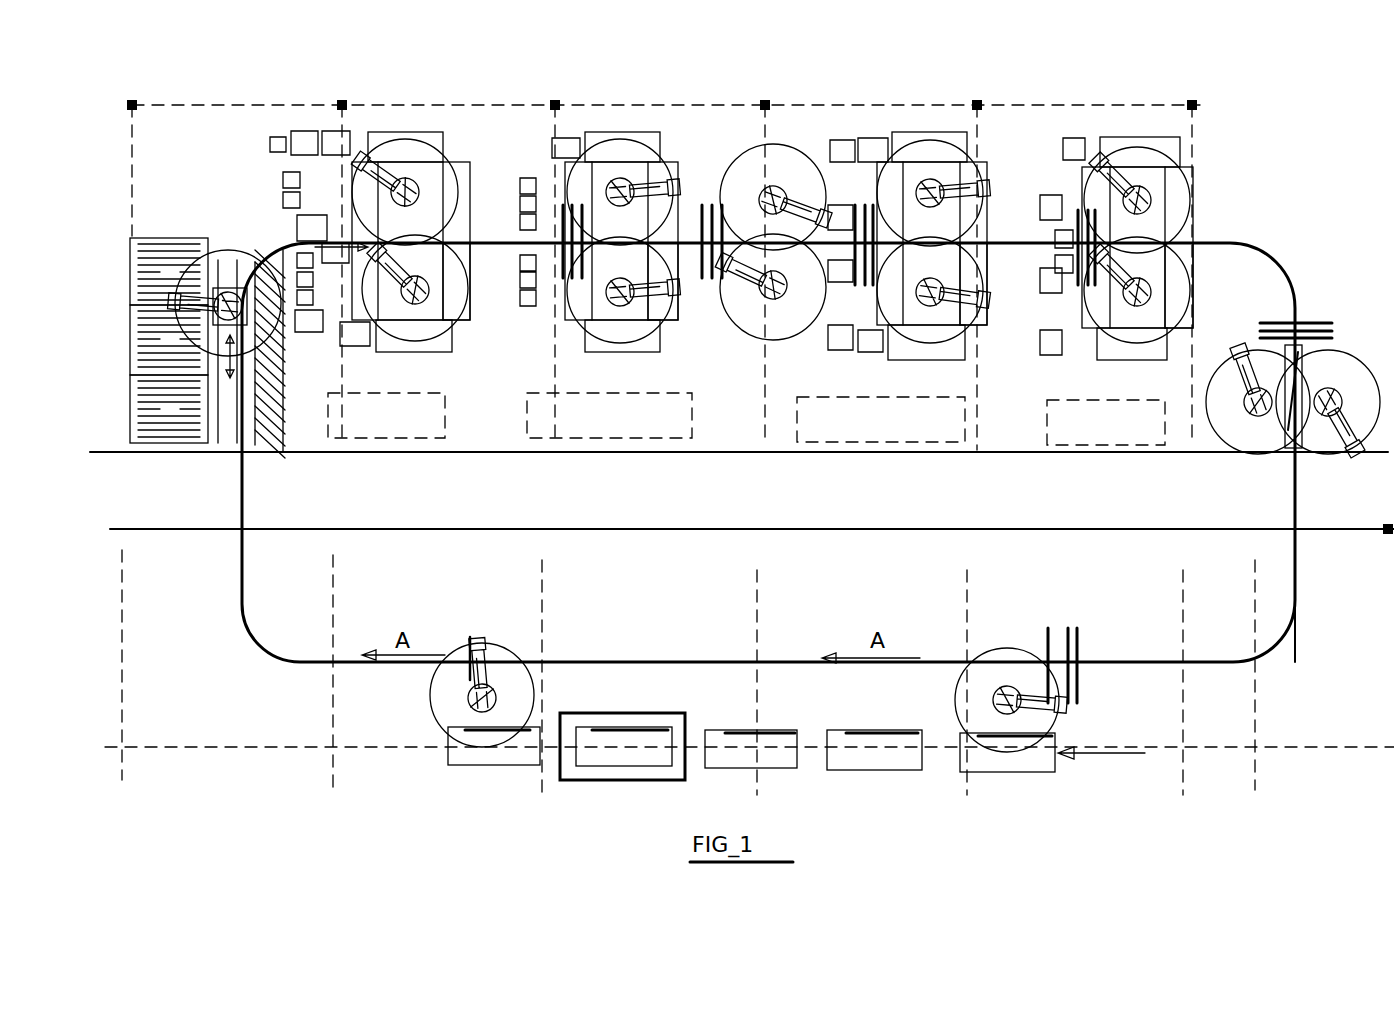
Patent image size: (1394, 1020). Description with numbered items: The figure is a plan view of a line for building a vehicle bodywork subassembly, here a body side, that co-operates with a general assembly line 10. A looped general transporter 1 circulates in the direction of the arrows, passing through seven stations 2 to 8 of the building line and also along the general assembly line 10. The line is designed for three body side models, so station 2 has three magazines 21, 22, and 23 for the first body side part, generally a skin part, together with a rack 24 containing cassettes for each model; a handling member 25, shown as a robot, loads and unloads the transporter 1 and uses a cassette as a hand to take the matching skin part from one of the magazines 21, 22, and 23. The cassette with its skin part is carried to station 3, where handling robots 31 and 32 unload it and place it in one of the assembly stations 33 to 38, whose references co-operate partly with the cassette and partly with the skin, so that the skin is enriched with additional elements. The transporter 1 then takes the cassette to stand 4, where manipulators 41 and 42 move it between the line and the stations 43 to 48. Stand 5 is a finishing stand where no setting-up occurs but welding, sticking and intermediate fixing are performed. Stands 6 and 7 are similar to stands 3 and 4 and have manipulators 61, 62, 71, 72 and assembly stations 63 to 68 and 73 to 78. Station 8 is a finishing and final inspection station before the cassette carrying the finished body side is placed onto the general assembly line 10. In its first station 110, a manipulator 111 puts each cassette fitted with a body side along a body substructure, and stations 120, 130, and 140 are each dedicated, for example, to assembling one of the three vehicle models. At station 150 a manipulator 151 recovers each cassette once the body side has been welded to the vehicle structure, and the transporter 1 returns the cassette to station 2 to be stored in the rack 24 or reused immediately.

The looped general transporter 1 is at (246, 610).
The station 2 is at (220, 210).
The station 3 is at (400, 98).
The stand 4 is at (600, 98).
The finishing stand 5 is at (794, 100).
The stand 6 is at (898, 98).
The stand 7 is at (1130, 98).
The finishing and final inspection station 8 is at (1336, 330).
The general assembly line 10 is at (1102, 741).
The magazine 21 is at (130, 270).
The magazine 22 is at (136, 338).
The magazine 23 is at (142, 400).
The rack 24 is at (284, 378).
The handling member 25 is at (230, 252).
The handling robot 31 is at (430, 162).
The handling robot 32 is at (388, 330).
The assembly station 33 is at (350, 188).
The assembly station 34 is at (440, 136).
The assembly station 35 is at (464, 222).
The assembly station 36 is at (472, 306).
The assembly station 37 is at (434, 344).
The assembly station 38 is at (372, 290).
The manipulator 41 is at (636, 186).
The manipulator 42 is at (634, 330).
The assembly station 43 is at (576, 178).
The assembly station 44 is at (628, 136).
The assembly station 45 is at (678, 176).
The assembly station 46 is at (674, 312).
The assembly station 47 is at (592, 342).
The assembly station 48 is at (552, 332).
The manipulator 61 is at (956, 172).
The manipulator 62 is at (948, 330).
The assembly station 63 is at (868, 178).
The assembly station 64 is at (950, 136).
The assembly station 65 is at (984, 228).
The assembly station 66 is at (982, 262).
The assembly station 67 is at (900, 350).
The assembly station 68 is at (880, 308).
The manipulator 71 is at (1118, 186).
The manipulator 72 is at (1116, 334).
The assembly station 73 is at (1074, 176).
The assembly station 74 is at (1160, 146).
The assembly station 75 is at (1194, 176).
The assembly station 76 is at (1190, 262).
The assembly station 77 is at (1148, 350).
The assembly station 78 is at (1086, 304).
The first station 110 is at (1004, 642).
The manipulator 111 is at (1042, 722).
The station 120 is at (878, 710).
The station 130 is at (768, 710).
The station 140 is at (644, 702).
The station 150 is at (540, 668).
The manipulator 151 is at (490, 660).